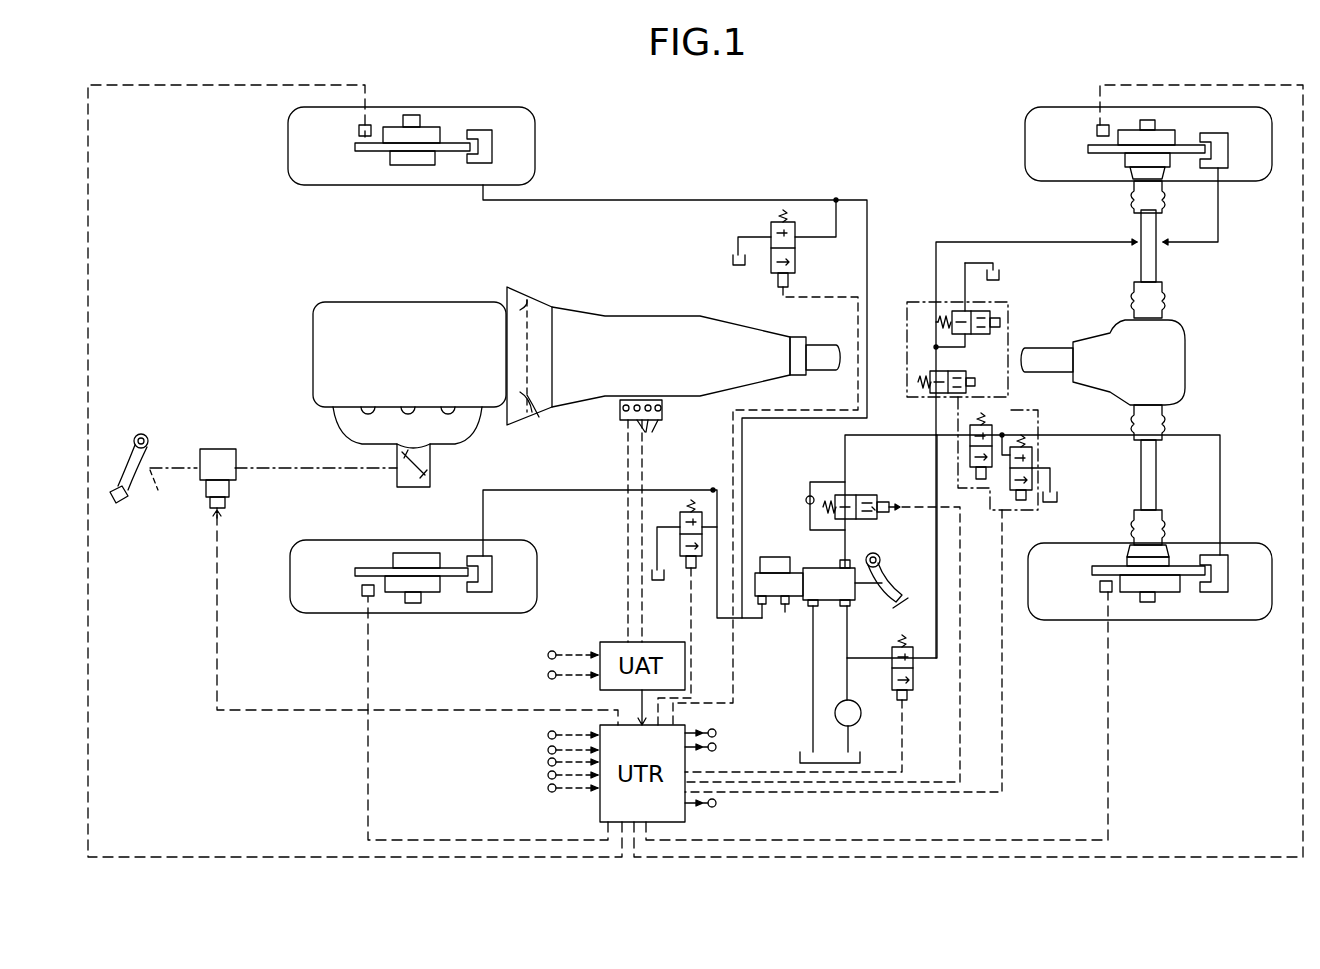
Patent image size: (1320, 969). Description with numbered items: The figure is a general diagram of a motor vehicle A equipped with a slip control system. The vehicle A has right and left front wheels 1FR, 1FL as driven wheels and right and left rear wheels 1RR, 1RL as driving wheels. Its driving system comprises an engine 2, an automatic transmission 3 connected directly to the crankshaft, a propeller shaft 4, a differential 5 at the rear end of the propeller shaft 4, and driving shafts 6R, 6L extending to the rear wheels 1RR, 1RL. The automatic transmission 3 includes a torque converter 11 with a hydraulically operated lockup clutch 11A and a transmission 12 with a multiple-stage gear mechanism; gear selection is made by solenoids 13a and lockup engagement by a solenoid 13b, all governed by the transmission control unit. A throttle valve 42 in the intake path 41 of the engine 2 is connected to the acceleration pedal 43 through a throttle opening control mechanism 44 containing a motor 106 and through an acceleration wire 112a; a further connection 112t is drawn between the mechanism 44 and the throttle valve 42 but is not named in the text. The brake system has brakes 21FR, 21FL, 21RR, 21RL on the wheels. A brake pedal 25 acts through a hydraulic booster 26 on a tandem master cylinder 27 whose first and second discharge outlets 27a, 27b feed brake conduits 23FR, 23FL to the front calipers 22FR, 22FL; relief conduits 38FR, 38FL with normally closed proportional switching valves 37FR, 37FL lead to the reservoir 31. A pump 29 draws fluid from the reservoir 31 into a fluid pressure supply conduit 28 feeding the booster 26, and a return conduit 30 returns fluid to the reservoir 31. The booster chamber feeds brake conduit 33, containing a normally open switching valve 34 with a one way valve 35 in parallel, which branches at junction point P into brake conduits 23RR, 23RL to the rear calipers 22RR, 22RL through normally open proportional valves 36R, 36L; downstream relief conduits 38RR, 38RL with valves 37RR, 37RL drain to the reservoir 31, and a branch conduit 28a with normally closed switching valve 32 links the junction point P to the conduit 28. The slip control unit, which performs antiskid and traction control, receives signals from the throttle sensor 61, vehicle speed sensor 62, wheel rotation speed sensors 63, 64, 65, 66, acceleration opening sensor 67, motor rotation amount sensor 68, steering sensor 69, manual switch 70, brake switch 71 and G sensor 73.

The right front wheel 1FR is at (318, 185).
The left front wheel 1FL is at (316, 613).
The right rear wheel 1RR is at (1025, 140).
The left rear wheel 1RL is at (1243, 620).
The front right wheel brake 21FR is at (457, 127).
The front left wheel brake 21FL is at (465, 589).
The rear right wheel brake 21RR is at (1187, 118).
The rear left wheel brake 21RL is at (1195, 603).
The caliper 22FR is at (492, 139).
The caliper 22FL is at (492, 572).
The caliper 22RR is at (1228, 150).
The caliper 22RL is at (1222, 567).
The wheel rotation speed sensor 64 is at (359, 130).
The wheel rotation speed sensor 63 is at (355, 594).
The wheel rotation speed sensor 66 is at (1096, 122).
The wheel rotation speed sensor 65 is at (1100, 592).
The engine 2 is at (399, 313).
The automatic transmission 3 is at (679, 333).
The torque converter 11 is at (530, 304).
The lockup clutch 11A is at (537, 420).
The transmission 12 is at (695, 318).
The solenoids 13a is at (659, 425).
The solenoid 13b is at (622, 426).
The propeller shaft 4 is at (1042, 348).
The differential 5 is at (1171, 368).
The driving shaft 6R is at (1142, 276).
The driving shaft 6L is at (1146, 499).
The brake conduit 23FR is at (688, 200).
The brake conduit 23FL is at (527, 490).
The brake conduit 23RR is at (999, 242).
The brake conduit 23RL is at (1214, 449).
The magnetic proportional switching valve 37FR is at (784, 222).
The magnetic proportional switching valve 37FL is at (687, 512).
The magnetic proportional switching valve 37RR is at (956, 305).
The magnetic proportional switching valve 37RL is at (1028, 454).
The relief conduit 38FR is at (739, 237).
The relief conduit 38FL is at (656, 543).
The relief conduit 38RR is at (981, 258).
The relief conduit 38RL is at (1050, 476).
The magnetic proportional switching valve 36R is at (959, 364).
The magnetic proportional switching valve 36L is at (1011, 430).
The reservoir 31 is at (802, 756).
The intake path 41 is at (397, 476).
The throttle valve 42 is at (428, 468).
The acceleration pedal 43 is at (114, 505).
The throttle opening control mechanism 44 is at (218, 449).
The motor 106 is at (225, 503).
The acceleration wire 112a is at (162, 499).
The throttle linkage 112t is at (309, 468).
The brake pedal 25 is at (900, 589).
The hydraulic booster 26 is at (820, 568).
The tandem type master cylinder 27 is at (769, 557).
The first discharge outlet 27a is at (786, 614).
The second discharge outlet 27b is at (759, 606).
The fluid pressure supply conduit 28 is at (849, 704).
The branch conduit 28a is at (917, 660).
The pump 29 is at (858, 725).
The return conduit 30 is at (803, 704).
The switching valve 32 is at (894, 658).
The brake conduit 33 is at (866, 437).
The magnetic switching valve 34 is at (870, 494).
The one way valve 35 is at (808, 499).
The junction point P is at (936, 435).
The motor vehicle A is at (643, 172).
The throttle sensor 61 is at (548, 677).
The vehicle speed sensor 62 is at (548, 655).
The acceleration opening sensor 67 is at (547, 734).
The motor rotation amount sensor 68 is at (548, 750).
The steering sensor 69 is at (548, 762).
The manual switch 70 is at (710, 729).
The brake switch 71 is at (716, 748).
The G sensor 73 is at (716, 803).